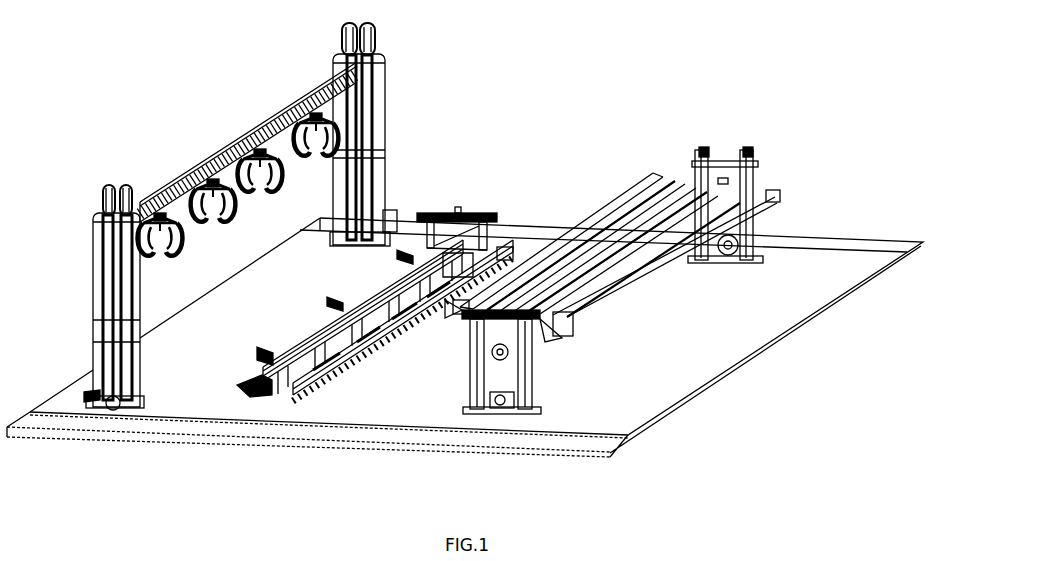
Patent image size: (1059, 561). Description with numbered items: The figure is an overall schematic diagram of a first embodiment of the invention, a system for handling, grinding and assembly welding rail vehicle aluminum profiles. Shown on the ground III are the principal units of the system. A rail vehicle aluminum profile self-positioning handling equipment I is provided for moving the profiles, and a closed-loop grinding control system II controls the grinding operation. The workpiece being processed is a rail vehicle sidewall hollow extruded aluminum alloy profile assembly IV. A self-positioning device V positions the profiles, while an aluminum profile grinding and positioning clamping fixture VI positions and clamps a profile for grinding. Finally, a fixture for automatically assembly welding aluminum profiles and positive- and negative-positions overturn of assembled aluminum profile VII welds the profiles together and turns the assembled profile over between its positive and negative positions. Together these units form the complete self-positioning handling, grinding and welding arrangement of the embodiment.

The rail vehicle aluminum profile self-positioning handling equipment I is at (137, 207).
The closed-loop grinding control system II is at (447, 220).
The ground III is at (548, 227).
The rail vehicle sidewall hollow extruded aluminum alloy profile assembly IV is at (670, 173).
The self-positioning device V is at (247, 377).
The aluminum profile grinding and positioning clamping fixture VI is at (277, 387).
The fixture for automatically assembly welding aluminum profiles and positive- and n VII is at (545, 378).